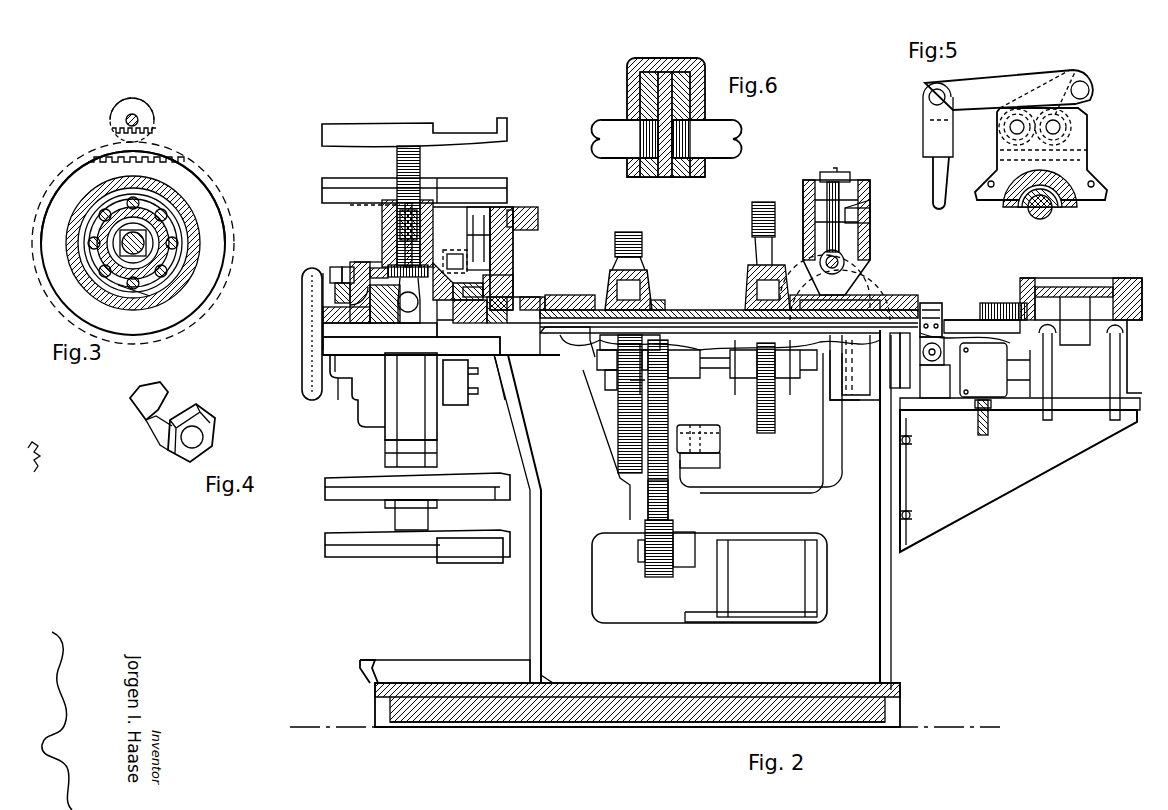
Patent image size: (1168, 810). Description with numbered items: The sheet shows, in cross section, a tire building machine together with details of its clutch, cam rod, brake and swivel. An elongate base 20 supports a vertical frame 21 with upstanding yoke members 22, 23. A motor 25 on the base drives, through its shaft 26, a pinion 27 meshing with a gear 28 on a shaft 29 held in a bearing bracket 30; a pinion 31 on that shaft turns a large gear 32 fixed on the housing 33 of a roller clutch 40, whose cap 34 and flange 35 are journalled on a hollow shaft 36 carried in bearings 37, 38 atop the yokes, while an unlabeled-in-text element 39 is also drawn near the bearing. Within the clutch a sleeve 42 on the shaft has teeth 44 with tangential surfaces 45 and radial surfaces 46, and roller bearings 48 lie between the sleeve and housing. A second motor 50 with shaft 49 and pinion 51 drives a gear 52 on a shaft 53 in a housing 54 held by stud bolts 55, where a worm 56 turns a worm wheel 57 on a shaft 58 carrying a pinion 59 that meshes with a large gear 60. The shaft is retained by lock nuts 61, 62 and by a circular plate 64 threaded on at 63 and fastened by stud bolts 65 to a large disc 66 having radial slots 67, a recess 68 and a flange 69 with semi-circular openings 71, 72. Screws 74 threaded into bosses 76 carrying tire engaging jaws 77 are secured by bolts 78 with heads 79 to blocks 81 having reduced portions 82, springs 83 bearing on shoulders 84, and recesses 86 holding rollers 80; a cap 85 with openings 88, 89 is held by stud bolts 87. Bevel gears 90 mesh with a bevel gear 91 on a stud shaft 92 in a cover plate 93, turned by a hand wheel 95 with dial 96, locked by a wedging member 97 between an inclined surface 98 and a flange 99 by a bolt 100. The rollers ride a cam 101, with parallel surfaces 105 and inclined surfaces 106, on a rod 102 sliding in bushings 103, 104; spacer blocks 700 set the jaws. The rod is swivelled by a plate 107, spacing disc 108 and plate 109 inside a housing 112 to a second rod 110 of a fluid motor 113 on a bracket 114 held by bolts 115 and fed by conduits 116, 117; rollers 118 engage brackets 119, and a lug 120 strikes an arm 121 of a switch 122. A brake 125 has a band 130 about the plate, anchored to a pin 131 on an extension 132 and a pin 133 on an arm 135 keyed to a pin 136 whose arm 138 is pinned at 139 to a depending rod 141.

In FIG. 2, the base 20 is at (672, 698).
In FIG. 2, the frame 21 is at (533, 662).
In FIG. 2, the yoke member 22 is at (840, 470).
In FIG. 2, the yoke member 23 is at (538, 462).
In FIG. 2, the motor 25 is at (772, 612).
In FIG. 2, the shaft 26 is at (640, 560).
In FIG. 2, the pinion 27 is at (660, 580).
In FIG. 2, the gear 28 is at (648, 512).
In FIG. 2, the shaft 29 is at (722, 438).
In FIG. 2, the bearing bracket 30 is at (722, 456).
In FIG. 3, the pinion 31 is at (150, 108).
In FIG. 2, the pinion 31 is at (630, 480).
In FIG. 3, the gear 32 is at (165, 140).
In FIG. 2, the gear 32 is at (615, 430).
In FIG. 3, the housing 33 is at (172, 266).
In FIG. 2, the housing 33 is at (642, 272).
In FIG. 2, the cap 34 is at (650, 294).
In FIG. 2, the flange 35 is at (580, 295).
In FIG. 3, the hollow shaft 36 is at (160, 225).
In FIG. 2, the hollow shaft 36 is at (700, 296).
In FIG. 2, the bearing 37 is at (905, 285).
In FIG. 2, the bearing 38 is at (548, 297).
In FIG. 2, the slide block 39 is at (945, 296).
In FIG. 2, the roller clutch 40 is at (642, 250).
In FIG. 3, the sleeve 42 is at (140, 290).
In FIG. 2, the sleeve 42 is at (675, 302).
In FIG. 3, the teeth 44 is at (176, 243).
In FIG. 3, the tangential surfaces 45 is at (98, 282).
In FIG. 3, the radially directed surfaces 46 is at (88, 254).
In FIG. 3, the roller bearings 48 is at (122, 290).
In FIG. 2, the shaft 49 is at (845, 367).
In FIG. 2, the second motor 50 is at (880, 275).
In FIG. 2, the pinion 51 is at (848, 345).
In FIG. 2, the gear 52 is at (845, 250).
In FIG. 2, the shaft 53 is at (870, 305).
In FIG. 2, the housing 54 is at (868, 214).
In FIG. 2, the stud bolts 55 is at (886, 300).
In FIG. 2, the worm 56 is at (850, 236).
In FIG. 2, the worm wheel 57 is at (835, 168).
In FIG. 2, the shaft 58 is at (850, 200).
In FIG. 2, the pinion 59 is at (765, 200).
In FIG. 2, the gear 60 is at (778, 428).
In FIG. 2, the lock nut 61 is at (895, 380).
In FIG. 2, the lock nut 62 is at (908, 380).
In FIG. 2, the threaded connection 63 is at (500, 357).
In FIG. 2, the circular plate 64 is at (510, 298).
In FIG. 2, the stud bolts 65 is at (480, 302).
In FIG. 2, the disc 66 is at (470, 220).
In FIG. 2, the slots 67 is at (382, 245).
In FIG. 2, the circular recess 68 is at (450, 245).
In FIG. 2, the flange 69 is at (468, 347).
In FIG. 2, the semi-circular openings 71 is at (458, 250).
In FIG. 2, the semi-circular openings 72 is at (445, 329).
In FIG. 2, the screws 74 is at (400, 222).
In FIG. 2, the bosses 76 is at (425, 165).
In FIG. 2, the tire engaging jaws 77 is at (460, 143).
In FIG. 2, the bolts 78 is at (367, 213).
In FIG. 2, the heads 79 is at (400, 215).
In FIG. 2, the roller 80 is at (410, 312).
In FIG. 2, the blocks 81 is at (395, 310).
In FIG. 2, the reduced portions 82 is at (480, 290).
In FIG. 2, the springs 83 is at (360, 268).
In FIG. 2, the shoulders 84 is at (485, 290).
In FIG. 2, the cap 85 is at (340, 330).
In FIG. 2, the semi-cylindrical recess 86 is at (414, 312).
In FIG. 2, the stud bolts 87 is at (335, 322).
In FIG. 2, the semi-circular openings 88 is at (372, 270).
In FIG. 2, the semi-circular openings 89 is at (385, 300).
In FIG. 2, the bevel gears 90 is at (388, 270).
In FIG. 2, the bevel gear 91 is at (352, 297).
In FIG. 2, the stud shaft 92 is at (340, 380).
In FIG. 2, the cover plate 93 is at (388, 200).
In FIG. 2, the hand wheel 95 is at (308, 400).
In FIG. 2, the dial 96 is at (325, 316).
In FIG. 2, the wedging member 97 is at (345, 272).
In FIG. 2, the inclined surface 98 is at (340, 285).
In FIG. 2, the flange 99 is at (360, 260).
In FIG. 2, the bolt 100 is at (330, 274).
In FIG. 4, the cam 101 is at (182, 406).
In FIG. 2, the cam 101 is at (406, 322).
In FIG. 3, the rod 102 is at (150, 290).
In FIG. 4, the rod 102 is at (150, 393).
In FIG. 6, the rod 102 is at (612, 155).
In FIG. 2, the rod 102 is at (556, 360).
In FIG. 2, the bushing 103 is at (500, 370).
In FIG. 2, the bushing 104 is at (860, 370).
In FIG. 4, the cam surfaces 105 is at (162, 440).
In FIG. 4, the inclined surfaces 106 is at (170, 458).
In FIG. 6, the plate 107 is at (652, 180).
In FIG. 6, the spacing disc 108 is at (666, 180).
In FIG. 6, the plate 109 is at (680, 180).
In FIG. 6, the second rod 110 is at (715, 150).
In FIG. 2, the second rod 110 is at (990, 318).
In FIG. 6, the housing 112 is at (630, 76).
In FIG. 2, the housing 112 is at (950, 303).
In FIG. 2, the fluid motor 113 is at (1080, 287).
In FIG. 2, the bracket 114 is at (1060, 455).
In FIG. 2, the bolts 115 is at (910, 445).
In FIG. 2, the conduit 116 is at (1055, 432).
In FIG. 2, the conduit 117 is at (1128, 425).
In FIG. 2, the rollers 118 is at (978, 412).
In FIG. 2, the brackets 119 is at (930, 400).
In FIG. 2, the lug 120 is at (962, 318).
In FIG. 2, the arm 121 is at (975, 348).
In FIG. 2, the switch 122 is at (1000, 405).
In FIG. 5, the brake 125 is at (1100, 188).
In FIG. 2, the brake 125 is at (455, 405).
In FIG. 5, the band 130 is at (1088, 160).
In FIG. 5, the pin 131 is at (1000, 133).
In FIG. 5, the upper extension 132 is at (1087, 135).
In FIG. 2, the upper extension 132 is at (505, 268).
In FIG. 5, the pin 133 is at (1075, 120).
In FIG. 5, the arm 135 is at (1092, 100).
In FIG. 5, the pin 136 is at (1093, 88).
In FIG. 2, the pin 136 is at (480, 210).
In FIG. 5, the arm 138 is at (990, 82).
In FIG. 2, the arm 138 is at (530, 205).
In FIG. 5, the pin 139 is at (927, 97).
In FIG. 5, the rod 141 is at (935, 185).
In FIG. 2, the blocks 700 is at (460, 565).